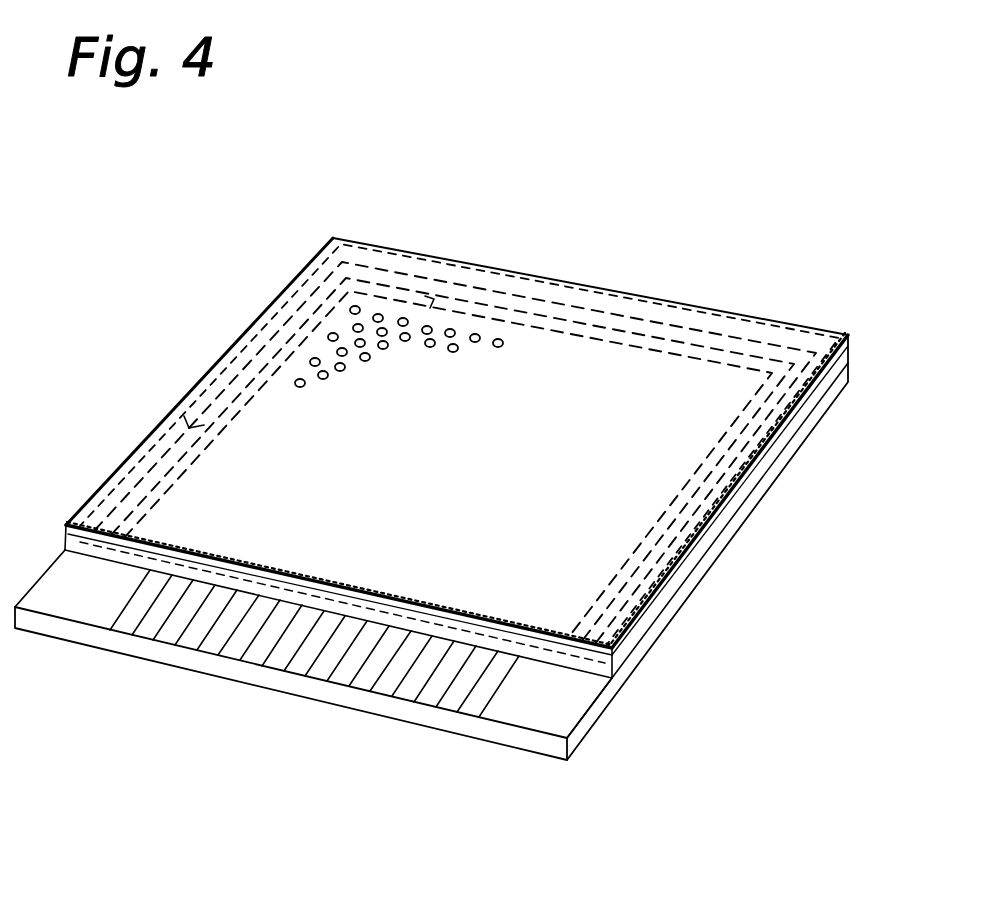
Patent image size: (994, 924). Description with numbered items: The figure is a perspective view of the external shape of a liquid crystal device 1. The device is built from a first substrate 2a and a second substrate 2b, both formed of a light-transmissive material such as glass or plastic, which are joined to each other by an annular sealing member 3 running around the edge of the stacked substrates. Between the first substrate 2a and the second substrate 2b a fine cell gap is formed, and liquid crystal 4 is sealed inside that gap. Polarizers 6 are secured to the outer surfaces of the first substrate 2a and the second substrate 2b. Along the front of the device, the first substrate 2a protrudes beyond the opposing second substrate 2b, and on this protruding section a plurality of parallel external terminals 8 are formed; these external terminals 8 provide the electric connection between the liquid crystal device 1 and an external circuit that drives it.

The liquid crystal device 1 is at (273, 272).
The first substrate 2a is at (673, 608).
The second substrate 2b is at (783, 438).
The annular sealing member 3 is at (171, 404).
The liquid crystal 4 is at (443, 280).
The polarizer 6 is at (670, 382).
The external terminals 8 is at (213, 632).